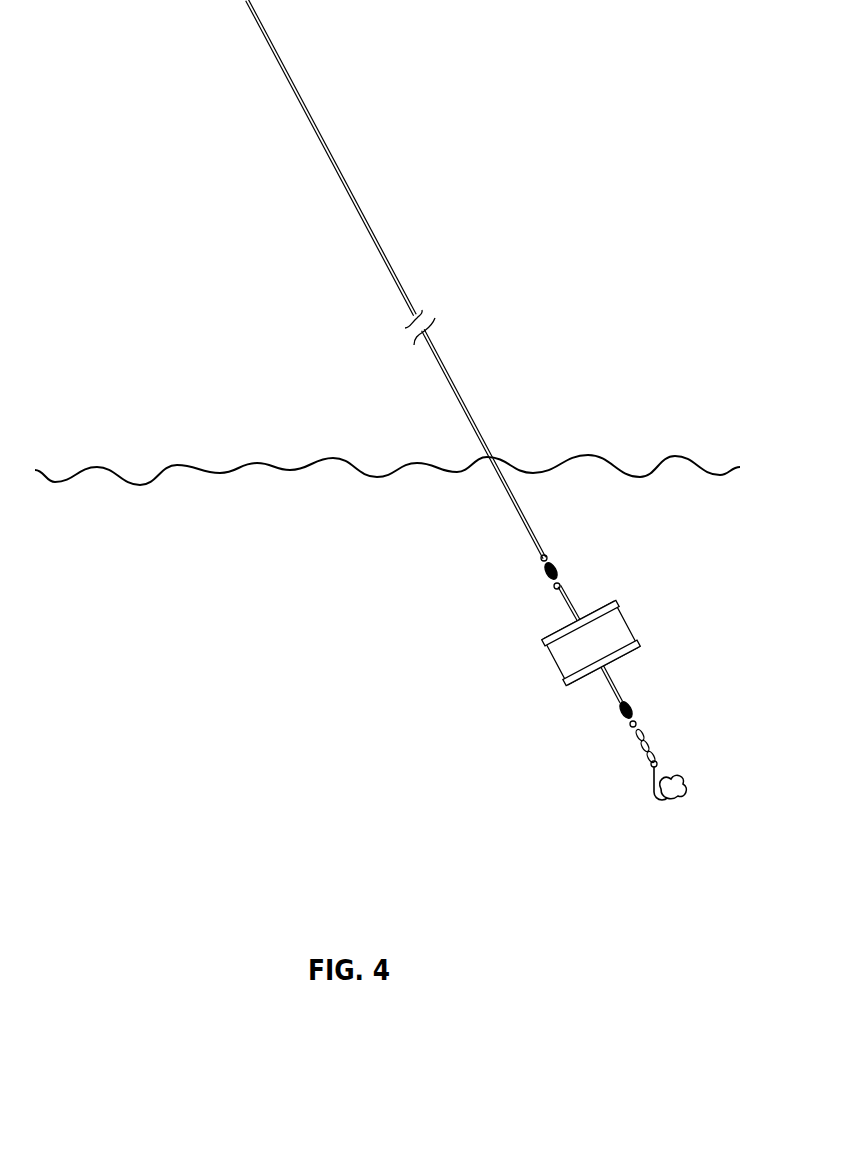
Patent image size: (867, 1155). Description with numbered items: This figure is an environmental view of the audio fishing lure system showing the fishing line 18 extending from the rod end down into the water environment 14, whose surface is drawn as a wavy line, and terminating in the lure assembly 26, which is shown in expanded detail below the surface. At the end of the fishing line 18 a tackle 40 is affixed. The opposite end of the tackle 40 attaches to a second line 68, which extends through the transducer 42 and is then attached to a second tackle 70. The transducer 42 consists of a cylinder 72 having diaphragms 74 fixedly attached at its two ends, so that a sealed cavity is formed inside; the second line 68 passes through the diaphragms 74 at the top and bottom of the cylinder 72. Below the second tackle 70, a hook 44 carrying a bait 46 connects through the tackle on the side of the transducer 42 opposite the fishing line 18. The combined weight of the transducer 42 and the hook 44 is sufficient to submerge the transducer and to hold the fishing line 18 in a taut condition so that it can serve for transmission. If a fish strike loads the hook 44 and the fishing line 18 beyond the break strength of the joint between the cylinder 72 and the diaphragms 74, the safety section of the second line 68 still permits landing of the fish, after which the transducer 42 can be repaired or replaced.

The water environment 14 is at (250, 587).
The fishing line 18 is at (382, 250).
The lure assembly 26 is at (436, 782).
The tackle 40 is at (558, 563).
The transducer 42 is at (558, 659).
The hook 44 is at (650, 777).
The bait 46 is at (687, 783).
The second line 68 is at (573, 598).
The second tackle 70 is at (636, 708).
The cylinder 72 is at (557, 662).
The diaphragms 74 is at (617, 603).